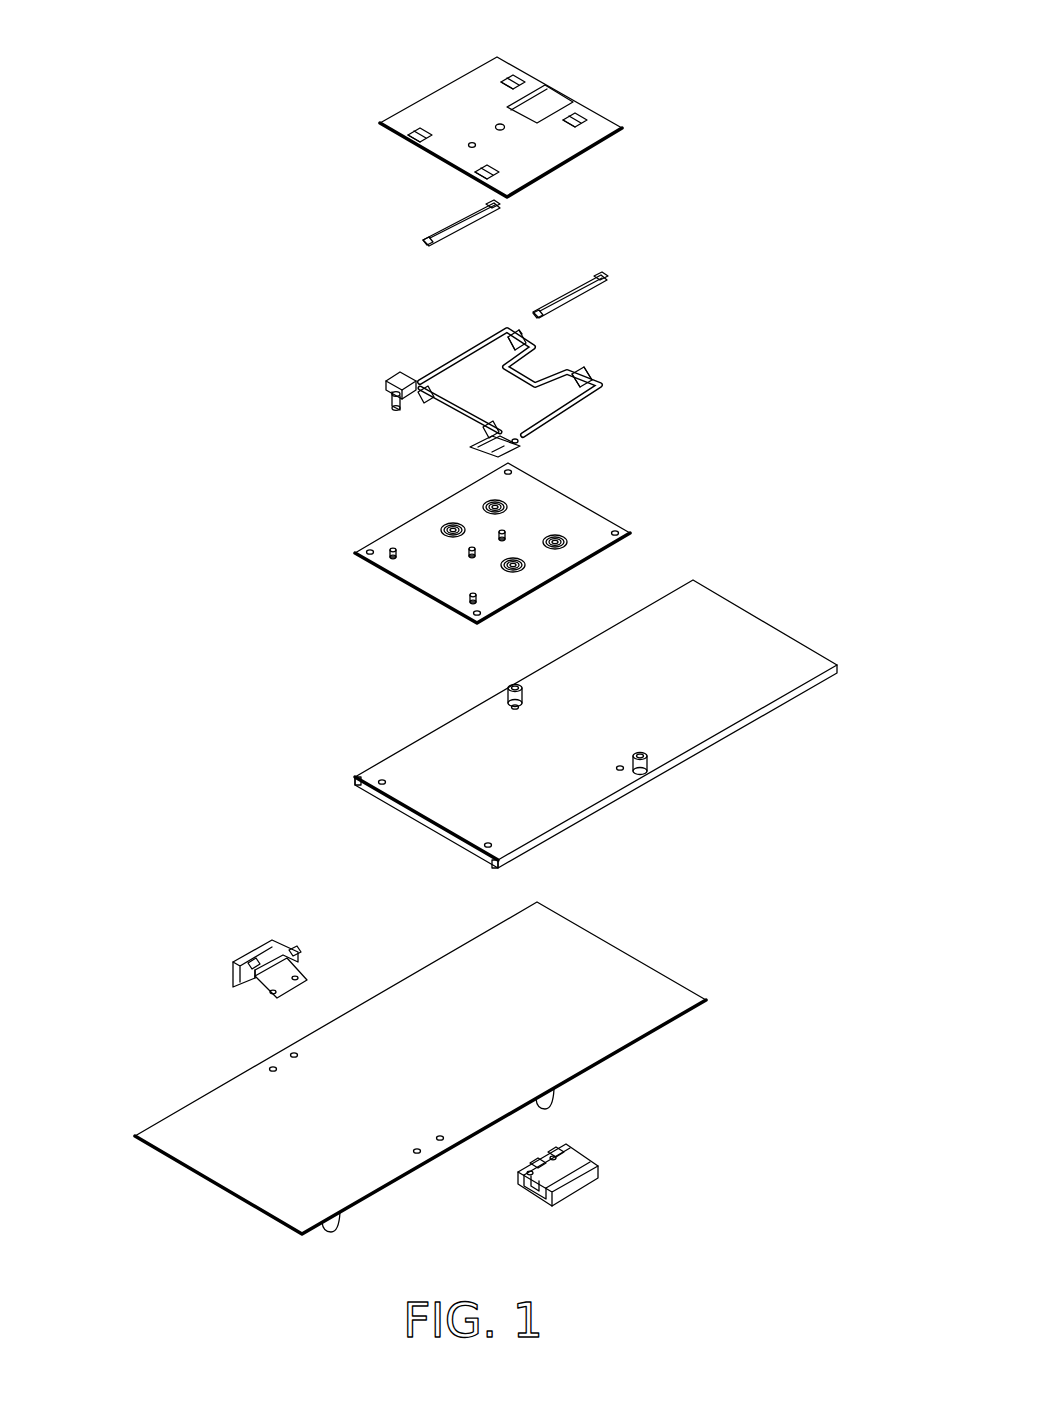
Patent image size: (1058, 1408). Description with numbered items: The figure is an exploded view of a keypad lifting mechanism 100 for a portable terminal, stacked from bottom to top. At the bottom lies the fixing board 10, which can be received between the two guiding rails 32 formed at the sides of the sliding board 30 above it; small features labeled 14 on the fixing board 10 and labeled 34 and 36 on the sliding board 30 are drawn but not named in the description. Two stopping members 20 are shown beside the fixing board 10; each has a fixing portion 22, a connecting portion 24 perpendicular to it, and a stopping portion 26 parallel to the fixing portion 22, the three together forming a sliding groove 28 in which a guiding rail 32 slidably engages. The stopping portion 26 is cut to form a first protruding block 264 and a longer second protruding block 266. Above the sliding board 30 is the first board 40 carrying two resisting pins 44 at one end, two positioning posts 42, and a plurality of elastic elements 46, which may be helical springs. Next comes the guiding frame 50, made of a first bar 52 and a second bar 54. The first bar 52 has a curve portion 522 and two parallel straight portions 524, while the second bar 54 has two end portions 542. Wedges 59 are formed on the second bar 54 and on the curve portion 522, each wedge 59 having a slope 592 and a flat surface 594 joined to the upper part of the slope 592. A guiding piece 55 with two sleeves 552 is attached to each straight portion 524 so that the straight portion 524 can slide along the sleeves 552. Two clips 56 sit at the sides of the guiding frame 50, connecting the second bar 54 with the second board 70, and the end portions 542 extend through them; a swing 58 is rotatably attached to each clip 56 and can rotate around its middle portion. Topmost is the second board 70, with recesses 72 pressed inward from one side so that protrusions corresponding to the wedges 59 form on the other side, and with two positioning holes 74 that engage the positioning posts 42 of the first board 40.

The keypad lifting mechanism 100 is at (182, 66).
The fixing board 10 is at (630, 960).
The foot 14 is at (328, 1226).
The stopping member 20 is at (630, 1166).
The fixing portion 22 is at (528, 1192).
The connecting portion 24 is at (577, 1196).
The stopping portion 26 is at (575, 1150).
The sliding groove 28 is at (240, 985).
The first protruding block 264 is at (252, 965).
The second protruding block 266 is at (293, 952).
The sliding board 30 is at (778, 645).
The guiding rail 32 is at (495, 866).
The hole 34 is at (380, 780).
The post 36 is at (645, 772).
The first board 40 is at (477, 544).
The positioning post 42 is at (504, 539).
The resisting pin 44 is at (390, 562).
The elastic element 46 is at (450, 528).
The guiding frame 50 is at (624, 392).
The first bar 52 is at (476, 273).
The curve portion 522 is at (565, 300).
The straight portion 524 is at (527, 430).
The second bar 54 is at (452, 405).
The end portion 542 is at (512, 447).
The guiding piece 55 is at (600, 280).
The sleeve 552 is at (497, 210).
The clip 56 is at (400, 383).
The swing 58 is at (392, 402).
The wedge 59 is at (624, 279).
The slope 592 is at (580, 374).
The flat surface 594 is at (588, 378).
The second board 70 is at (603, 132).
The recess 72 is at (580, 116).
The positioning hole 74 is at (498, 122).